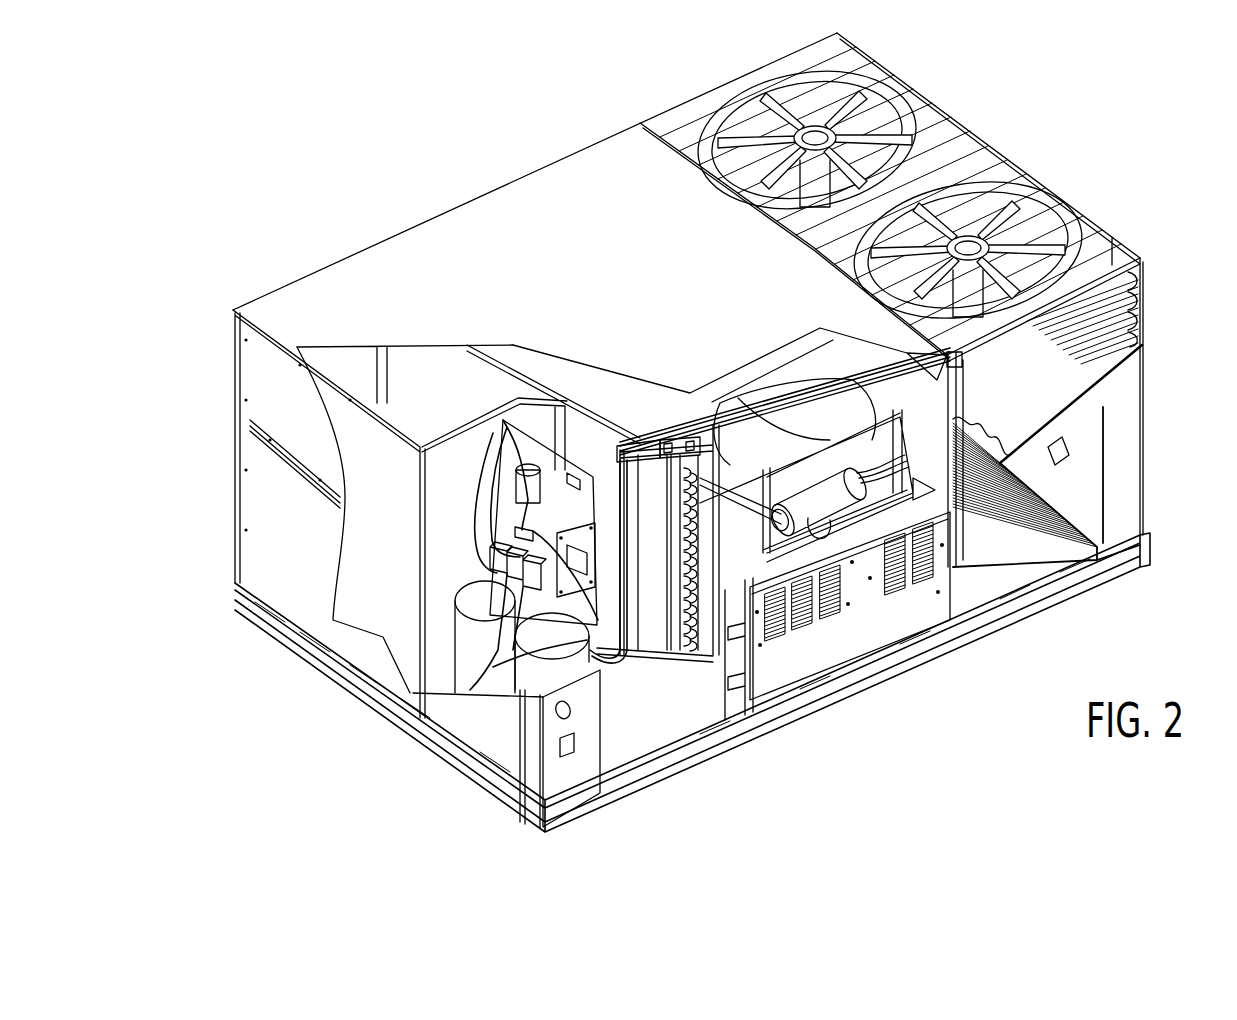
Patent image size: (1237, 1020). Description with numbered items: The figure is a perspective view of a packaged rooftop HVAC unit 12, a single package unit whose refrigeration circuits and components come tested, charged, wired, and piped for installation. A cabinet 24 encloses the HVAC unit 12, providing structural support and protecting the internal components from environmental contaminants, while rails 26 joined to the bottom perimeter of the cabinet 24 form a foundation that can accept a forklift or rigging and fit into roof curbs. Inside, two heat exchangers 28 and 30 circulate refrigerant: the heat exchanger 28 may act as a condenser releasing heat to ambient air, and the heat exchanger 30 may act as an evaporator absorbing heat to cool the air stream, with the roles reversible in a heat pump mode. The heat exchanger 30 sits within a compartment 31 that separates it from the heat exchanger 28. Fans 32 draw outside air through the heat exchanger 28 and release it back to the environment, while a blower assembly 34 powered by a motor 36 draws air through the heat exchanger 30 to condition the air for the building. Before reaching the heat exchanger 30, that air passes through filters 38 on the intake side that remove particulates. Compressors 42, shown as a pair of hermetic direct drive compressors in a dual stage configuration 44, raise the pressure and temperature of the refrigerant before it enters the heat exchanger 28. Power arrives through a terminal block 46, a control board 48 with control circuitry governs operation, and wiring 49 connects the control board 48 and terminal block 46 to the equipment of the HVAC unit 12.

The HVAC unit 12 is at (420, 139).
The cabinet 24 is at (280, 556).
The rails 26 is at (307, 647).
The heat exchanger 28 is at (1143, 314).
The heat exchanger 30 is at (680, 630).
The compartment 31 is at (703, 492).
The fans 32 is at (988, 197).
The blower assembly 34 is at (882, 448).
The motor 36 is at (817, 493).
The filters 38 is at (652, 478).
The compressors 42 is at (465, 637).
The dual stage configuration 44 is at (455, 590).
The terminal block 46 is at (465, 527).
The control board 48 is at (577, 548).
The wiring 49 is at (670, 448).